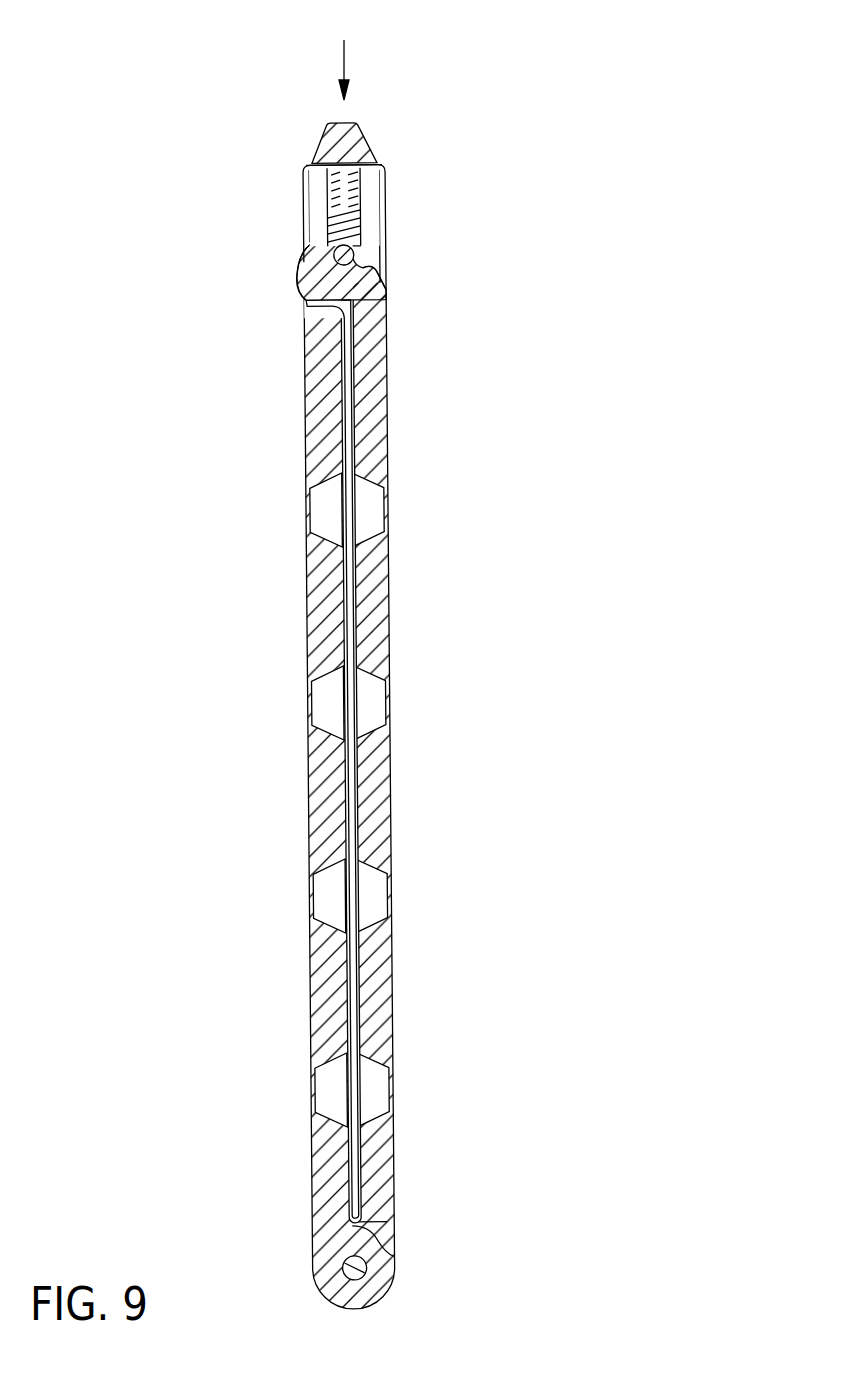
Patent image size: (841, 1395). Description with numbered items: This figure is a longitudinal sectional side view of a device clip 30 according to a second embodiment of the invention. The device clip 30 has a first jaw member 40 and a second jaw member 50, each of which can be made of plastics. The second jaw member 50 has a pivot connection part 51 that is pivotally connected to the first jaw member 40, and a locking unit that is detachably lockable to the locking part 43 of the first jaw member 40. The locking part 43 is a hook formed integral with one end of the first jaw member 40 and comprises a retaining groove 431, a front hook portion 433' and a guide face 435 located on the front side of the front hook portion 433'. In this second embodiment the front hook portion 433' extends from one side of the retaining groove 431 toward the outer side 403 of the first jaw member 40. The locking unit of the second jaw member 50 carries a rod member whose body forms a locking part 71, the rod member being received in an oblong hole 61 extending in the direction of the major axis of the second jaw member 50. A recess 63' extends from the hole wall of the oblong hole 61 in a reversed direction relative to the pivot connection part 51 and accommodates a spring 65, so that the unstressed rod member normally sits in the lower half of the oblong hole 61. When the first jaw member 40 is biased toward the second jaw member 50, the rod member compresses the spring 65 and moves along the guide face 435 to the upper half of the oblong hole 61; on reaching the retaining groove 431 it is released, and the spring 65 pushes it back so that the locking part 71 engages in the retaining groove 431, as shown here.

The device clip 30 is at (358, 36).
The first jaw member 40 is at (372, 632).
The outer side 403 is at (388, 594).
The locking part 43 is at (304, 290).
The retaining groove 431 is at (370, 283).
The front hook portion 433' is at (267, 255).
The guide face 435 is at (300, 266).
The second jaw member 50 is at (325, 797).
The pivot connection part 51 is at (335, 1268).
The oblong hole 61 is at (370, 232).
The recess 63' is at (384, 203).
The spring 65 is at (333, 186).
The locking part 71 is at (350, 254).